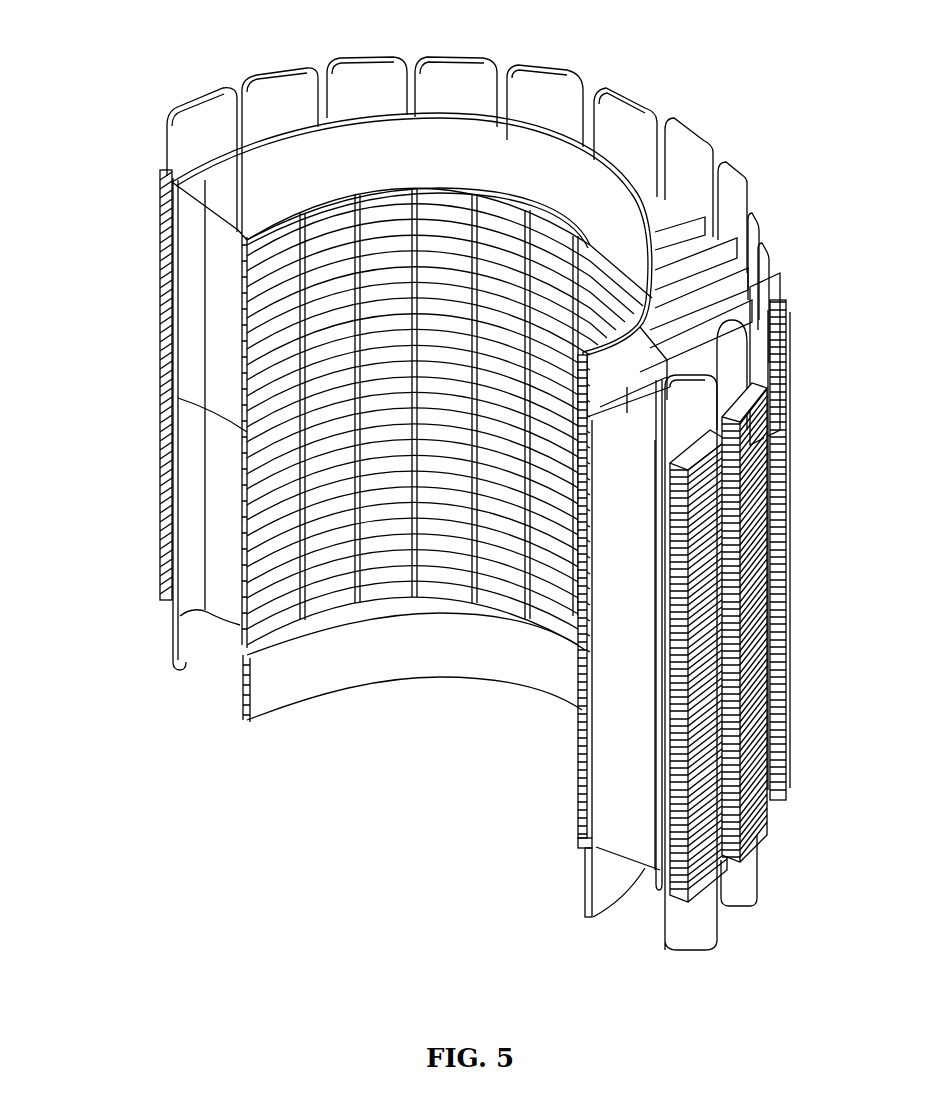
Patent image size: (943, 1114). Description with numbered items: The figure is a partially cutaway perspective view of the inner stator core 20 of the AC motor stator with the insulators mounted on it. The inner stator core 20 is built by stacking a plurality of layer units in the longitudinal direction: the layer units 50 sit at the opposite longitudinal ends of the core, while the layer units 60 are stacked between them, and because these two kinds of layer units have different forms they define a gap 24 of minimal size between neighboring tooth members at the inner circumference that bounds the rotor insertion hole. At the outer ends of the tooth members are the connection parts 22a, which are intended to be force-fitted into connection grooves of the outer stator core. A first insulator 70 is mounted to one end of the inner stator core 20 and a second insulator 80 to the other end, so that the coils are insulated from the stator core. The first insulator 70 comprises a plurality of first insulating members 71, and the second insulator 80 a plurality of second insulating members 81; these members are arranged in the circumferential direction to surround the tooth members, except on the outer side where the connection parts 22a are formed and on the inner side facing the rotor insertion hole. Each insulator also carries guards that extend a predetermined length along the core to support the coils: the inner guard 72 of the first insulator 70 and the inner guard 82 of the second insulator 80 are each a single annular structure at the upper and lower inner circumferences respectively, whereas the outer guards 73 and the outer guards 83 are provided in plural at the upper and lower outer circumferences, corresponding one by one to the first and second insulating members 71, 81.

The inner stator core 20 is at (146, 345).
The connection parts 22a is at (713, 485).
The gap 24 is at (475, 605).
The layer units 50 is at (245, 237).
The layer units 60 is at (248, 247).
The first insulator 70 is at (655, 607).
The first insulating members 71 is at (630, 635).
The inner guard 72 is at (372, 130).
The outer guards 73 is at (277, 80).
The second insulator 80 is at (655, 730).
The second insulating members 81 is at (615, 783).
The inner guard 82 is at (300, 690).
The outer guards 83 is at (737, 890).